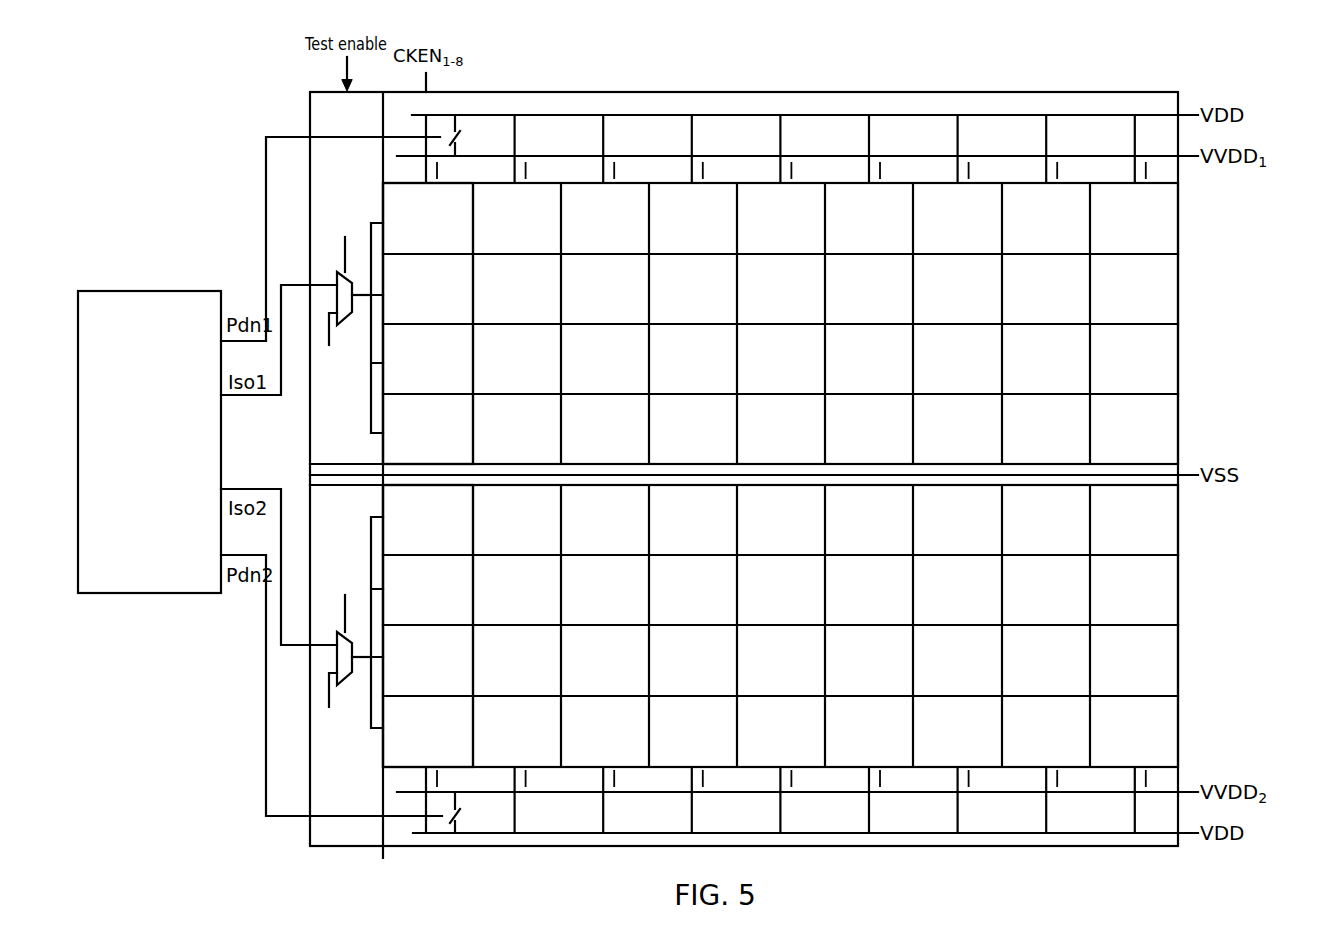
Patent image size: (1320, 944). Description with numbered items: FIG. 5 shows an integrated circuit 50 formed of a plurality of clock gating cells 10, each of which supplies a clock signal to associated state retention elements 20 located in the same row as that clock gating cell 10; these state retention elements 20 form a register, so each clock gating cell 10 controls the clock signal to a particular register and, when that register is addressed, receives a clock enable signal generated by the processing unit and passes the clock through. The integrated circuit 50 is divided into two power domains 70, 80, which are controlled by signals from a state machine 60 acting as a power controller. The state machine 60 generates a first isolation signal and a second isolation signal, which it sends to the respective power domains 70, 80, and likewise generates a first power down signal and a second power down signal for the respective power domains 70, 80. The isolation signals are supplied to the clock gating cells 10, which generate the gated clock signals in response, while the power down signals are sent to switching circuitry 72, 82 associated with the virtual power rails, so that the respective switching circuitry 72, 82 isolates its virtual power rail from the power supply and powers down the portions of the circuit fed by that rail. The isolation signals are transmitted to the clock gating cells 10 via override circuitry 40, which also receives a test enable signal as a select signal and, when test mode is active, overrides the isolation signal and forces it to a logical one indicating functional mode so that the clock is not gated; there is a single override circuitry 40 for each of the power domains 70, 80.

The clock gating cell 10 is at (478, 228).
The state retention element 20 is at (1179, 214).
The override circuitry 40 is at (337, 274).
The integrated circuit 50 is at (1266, 91).
The state machine 60 is at (148, 291).
The power domain 70 is at (338, 395).
The switching circuitry 72 is at (458, 133).
The power domain 80 is at (337, 507).
The switching circuitry 82 is at (458, 818).